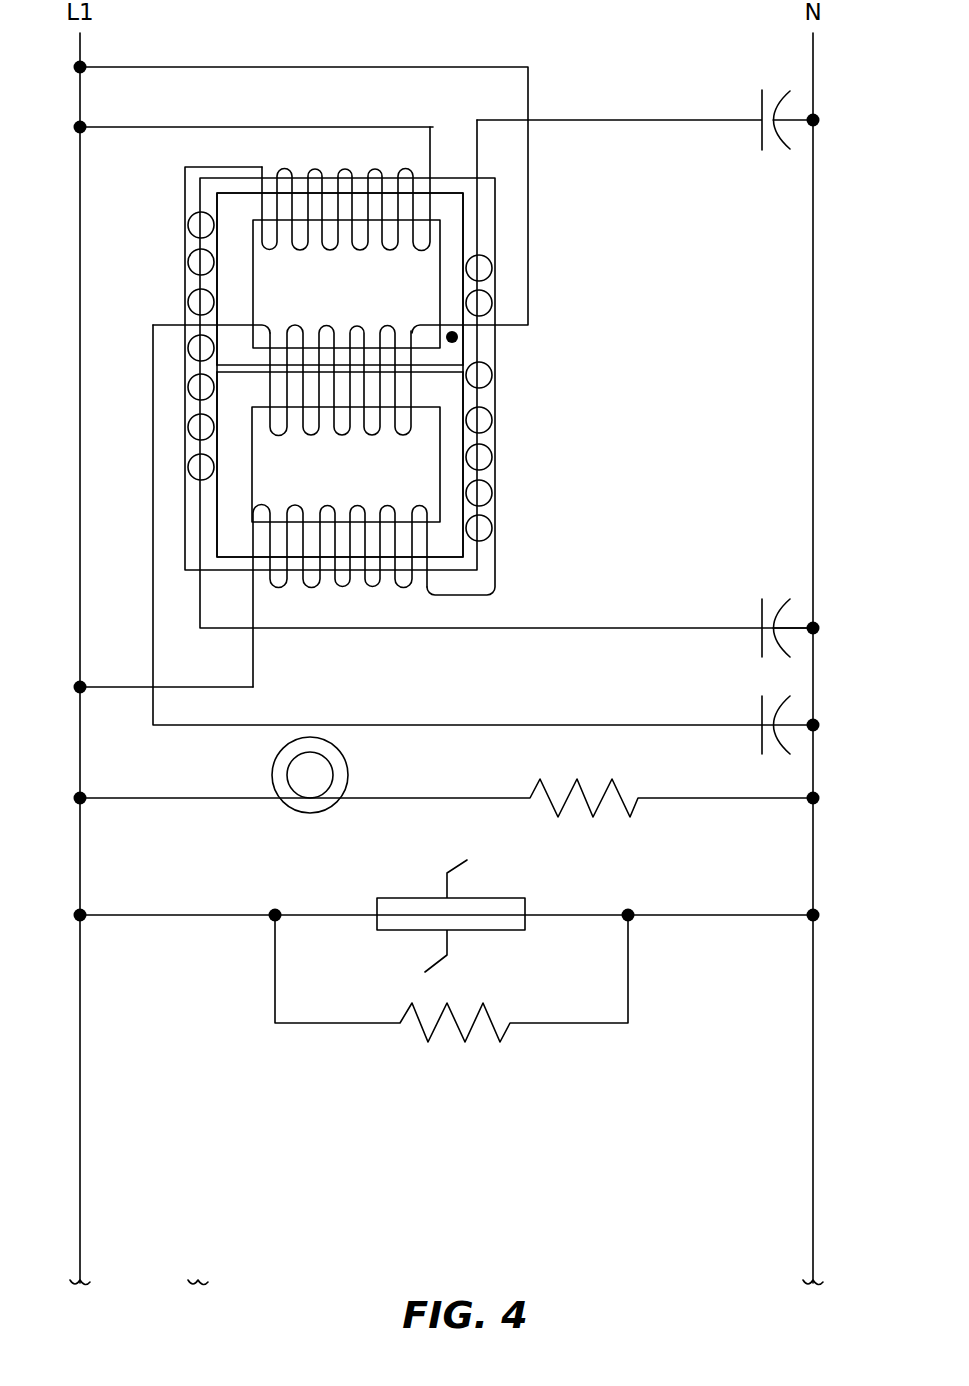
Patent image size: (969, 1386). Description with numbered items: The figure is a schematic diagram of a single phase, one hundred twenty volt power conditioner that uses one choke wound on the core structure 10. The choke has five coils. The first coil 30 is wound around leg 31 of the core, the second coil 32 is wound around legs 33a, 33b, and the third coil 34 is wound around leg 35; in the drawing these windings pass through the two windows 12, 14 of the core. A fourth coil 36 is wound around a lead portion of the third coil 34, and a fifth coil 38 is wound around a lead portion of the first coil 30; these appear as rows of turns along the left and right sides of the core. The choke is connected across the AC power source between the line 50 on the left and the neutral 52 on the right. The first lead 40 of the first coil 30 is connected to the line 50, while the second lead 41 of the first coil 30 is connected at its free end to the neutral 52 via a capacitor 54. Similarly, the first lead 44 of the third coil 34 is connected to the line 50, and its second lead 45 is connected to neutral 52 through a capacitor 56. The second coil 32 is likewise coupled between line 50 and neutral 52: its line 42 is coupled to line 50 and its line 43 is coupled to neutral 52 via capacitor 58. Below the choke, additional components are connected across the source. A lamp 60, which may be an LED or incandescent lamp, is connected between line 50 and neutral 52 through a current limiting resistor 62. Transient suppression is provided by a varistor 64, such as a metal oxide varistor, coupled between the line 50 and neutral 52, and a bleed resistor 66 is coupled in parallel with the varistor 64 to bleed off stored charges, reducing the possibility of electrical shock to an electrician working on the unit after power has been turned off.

The core structure 10 is at (152, 210).
The first window 12 is at (240, 280).
The second window 14 is at (238, 468).
The first coil 30 is at (332, 252).
The leg 31 is at (224, 222).
The second coil 32 is at (312, 435).
The leg 33a is at (423, 358).
The leg 33b is at (404, 401).
The third coil 34 is at (313, 588).
The leg 35 is at (227, 556).
The fourth coil 36 is at (185, 290).
The fifth coil 38 is at (497, 410).
The first lead 40 is at (435, 164).
The second lead 41 is at (236, 166).
The line 42 is at (414, 323).
The line 43 is at (263, 328).
The first lead 44 is at (251, 614).
The second lead 45 is at (460, 600).
The line 50 is at (84, 372).
The neutral 52 is at (808, 312).
The capacitor 54 is at (760, 140).
The capacitor 56 is at (760, 616).
The capacitor 58 is at (760, 713).
The lamp 60 is at (347, 772).
The current limiting resistor 62 is at (620, 792).
The varistor 64 is at (500, 900).
The bleed resistor 66 is at (470, 1030).